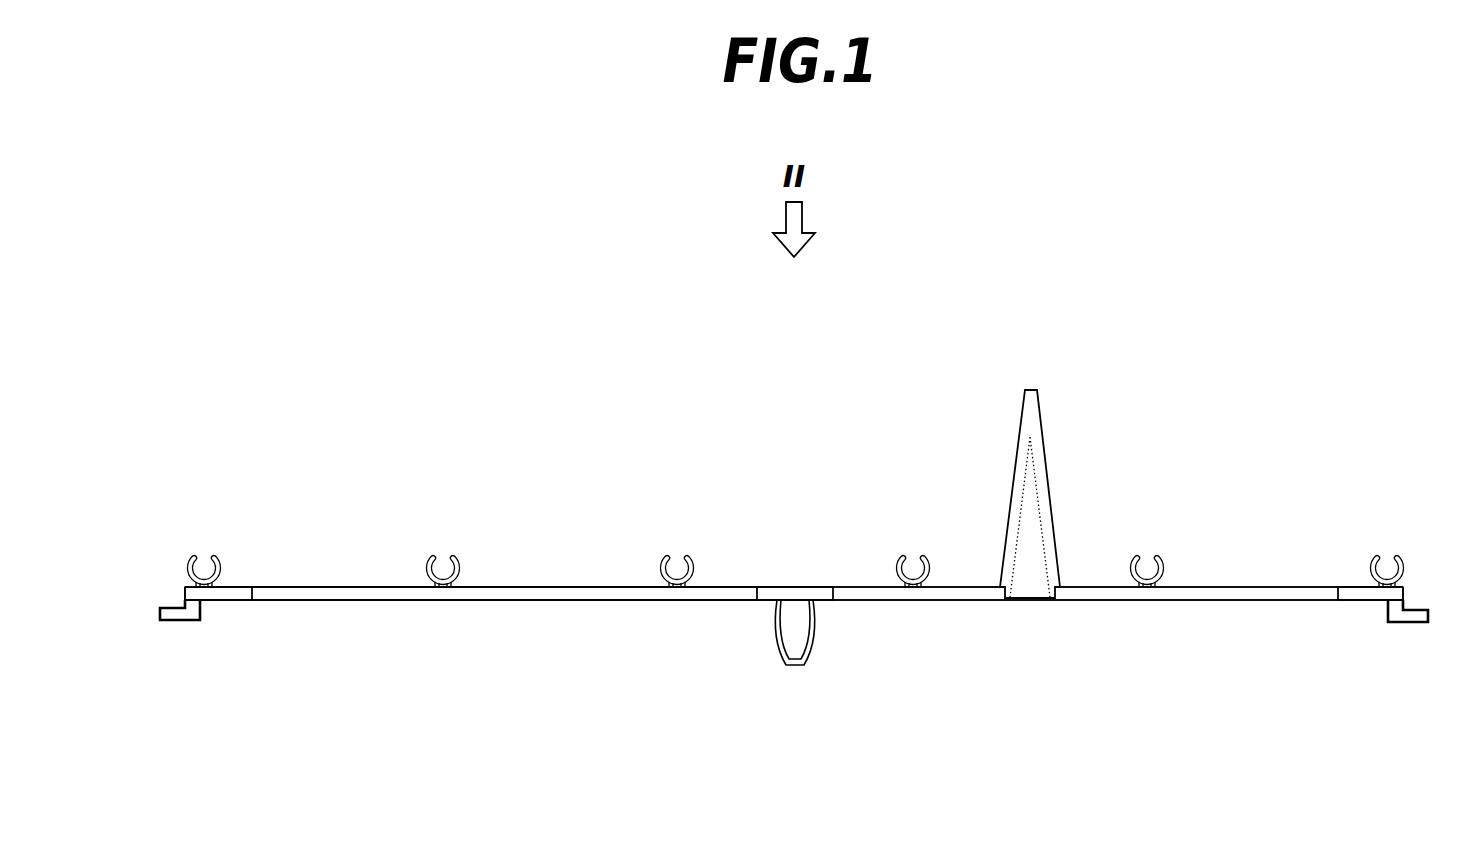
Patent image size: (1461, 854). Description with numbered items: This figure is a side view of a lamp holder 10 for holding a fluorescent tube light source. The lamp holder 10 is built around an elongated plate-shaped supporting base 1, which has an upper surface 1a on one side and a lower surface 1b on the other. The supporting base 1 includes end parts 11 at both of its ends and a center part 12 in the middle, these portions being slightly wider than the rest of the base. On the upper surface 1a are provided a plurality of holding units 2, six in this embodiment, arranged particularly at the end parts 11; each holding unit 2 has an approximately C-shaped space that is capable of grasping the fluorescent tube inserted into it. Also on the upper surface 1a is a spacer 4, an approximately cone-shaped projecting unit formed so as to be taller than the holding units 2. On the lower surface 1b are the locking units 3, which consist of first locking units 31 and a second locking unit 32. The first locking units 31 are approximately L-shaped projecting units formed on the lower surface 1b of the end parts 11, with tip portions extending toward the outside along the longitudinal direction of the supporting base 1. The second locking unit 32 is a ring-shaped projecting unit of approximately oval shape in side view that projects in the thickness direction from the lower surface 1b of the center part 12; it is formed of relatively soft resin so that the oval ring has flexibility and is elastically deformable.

The lamp holder 10 is at (807, 387).
The supporting base 1 is at (543, 595).
The upper surface 1a is at (583, 583).
The lower surface 1b is at (620, 604).
The end parts 11 is at (223, 597).
The center part 12 is at (798, 592).
The holding units 2 is at (216, 553).
The locking units 3 is at (783, 675).
The first locking units 31 is at (173, 617).
The second locking unit 32 is at (797, 667).
The spacer 4 is at (1038, 392).